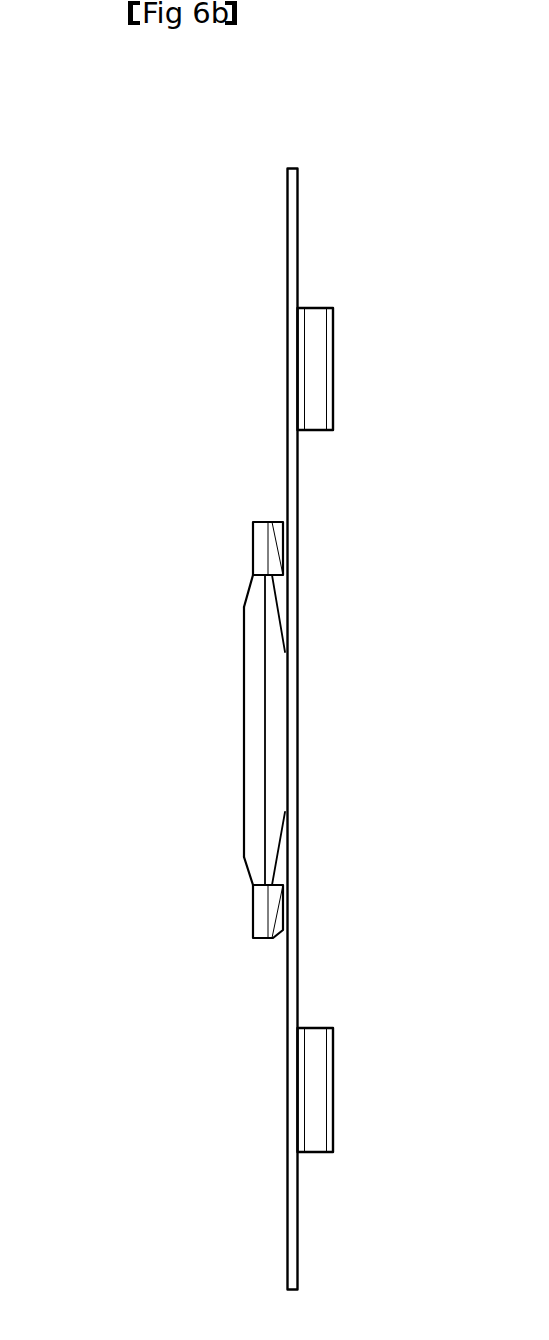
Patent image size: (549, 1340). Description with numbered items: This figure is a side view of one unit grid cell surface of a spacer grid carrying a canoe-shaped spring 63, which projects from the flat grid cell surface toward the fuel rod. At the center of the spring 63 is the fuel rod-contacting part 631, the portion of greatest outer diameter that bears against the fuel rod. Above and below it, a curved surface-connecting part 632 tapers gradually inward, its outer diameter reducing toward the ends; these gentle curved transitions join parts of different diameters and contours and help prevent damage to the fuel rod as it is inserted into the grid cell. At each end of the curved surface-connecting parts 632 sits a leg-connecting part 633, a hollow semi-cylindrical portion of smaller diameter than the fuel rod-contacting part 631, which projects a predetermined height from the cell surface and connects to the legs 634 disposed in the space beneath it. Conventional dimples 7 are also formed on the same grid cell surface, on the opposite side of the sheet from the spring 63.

The dimples 7 is at (330, 368).
The canoe-shaped spring 63 is at (234, 689).
The fuel rod-contacting part 631 is at (247, 772).
The curved surface-connecting part 632 is at (245, 594).
The leg-connecting part 633 is at (253, 537).
The legs 634 is at (280, 588).